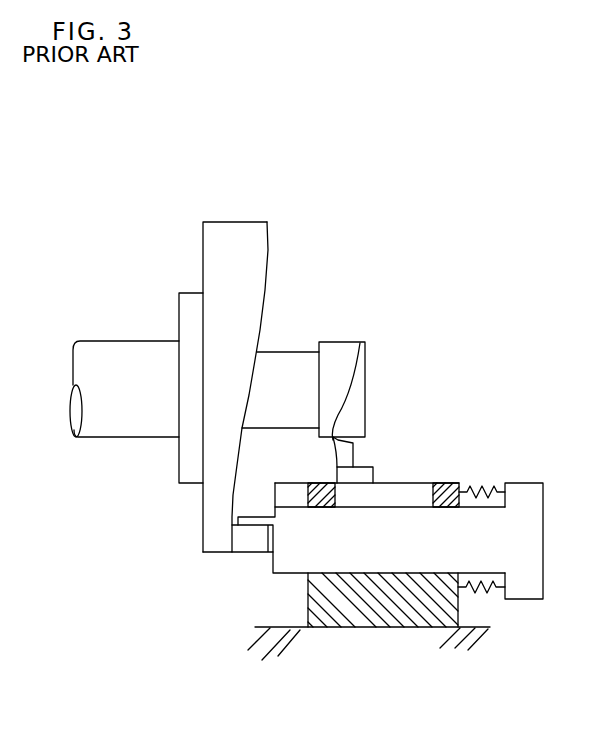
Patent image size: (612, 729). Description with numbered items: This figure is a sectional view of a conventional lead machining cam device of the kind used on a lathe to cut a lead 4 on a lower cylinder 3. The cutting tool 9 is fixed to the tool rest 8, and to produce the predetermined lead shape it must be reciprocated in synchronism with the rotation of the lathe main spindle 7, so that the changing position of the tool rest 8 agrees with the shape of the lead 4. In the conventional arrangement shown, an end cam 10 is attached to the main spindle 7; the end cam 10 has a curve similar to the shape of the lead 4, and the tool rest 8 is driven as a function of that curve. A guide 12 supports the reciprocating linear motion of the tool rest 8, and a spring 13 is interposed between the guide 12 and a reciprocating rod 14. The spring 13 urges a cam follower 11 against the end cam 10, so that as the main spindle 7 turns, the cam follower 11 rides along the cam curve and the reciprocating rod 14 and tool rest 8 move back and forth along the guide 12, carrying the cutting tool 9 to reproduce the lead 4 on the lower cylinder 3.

The lower cylinder 3 is at (345, 352).
The lead 4 is at (353, 385).
The main spindle 7 is at (110, 345).
The tool rest 8 is at (360, 480).
The cutting tool 9 is at (355, 448).
The end cam 10 is at (253, 243).
The cam follower 11 is at (252, 540).
The guide 12 is at (357, 610).
The spring 13 is at (483, 483).
The reciprocating rod 14 is at (490, 562).